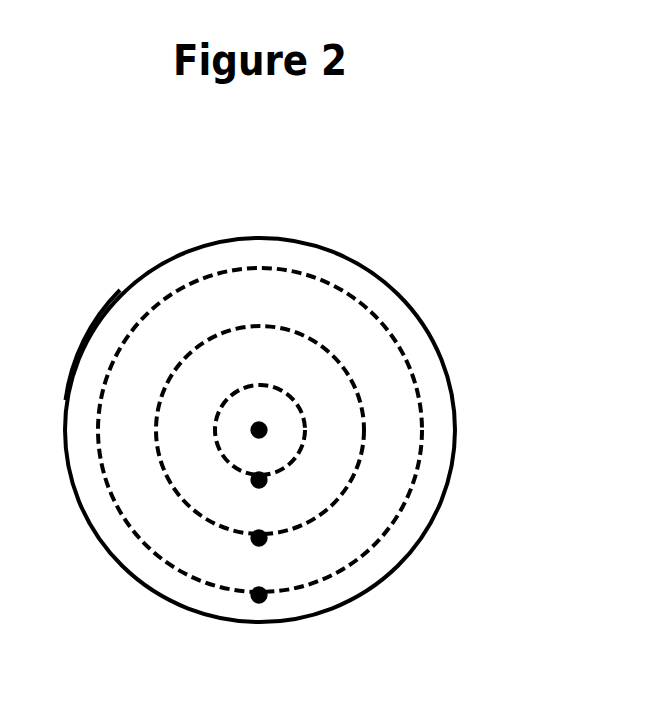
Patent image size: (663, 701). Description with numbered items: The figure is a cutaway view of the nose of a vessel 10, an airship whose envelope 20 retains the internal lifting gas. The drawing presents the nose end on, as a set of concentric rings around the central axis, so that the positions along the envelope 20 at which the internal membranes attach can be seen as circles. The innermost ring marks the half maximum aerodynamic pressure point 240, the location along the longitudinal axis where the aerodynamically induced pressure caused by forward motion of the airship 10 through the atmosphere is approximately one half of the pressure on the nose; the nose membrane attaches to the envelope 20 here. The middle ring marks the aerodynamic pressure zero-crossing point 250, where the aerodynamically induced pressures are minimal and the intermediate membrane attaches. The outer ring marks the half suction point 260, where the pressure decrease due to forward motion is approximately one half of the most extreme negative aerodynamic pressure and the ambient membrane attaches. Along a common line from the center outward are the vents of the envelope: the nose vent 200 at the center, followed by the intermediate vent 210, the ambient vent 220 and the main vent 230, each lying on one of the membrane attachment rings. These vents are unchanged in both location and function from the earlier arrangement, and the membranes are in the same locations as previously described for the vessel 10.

The vessel 10 is at (424, 283).
The envelope 20 is at (98, 300).
The nose vent 200 is at (284, 430).
The intermediate vent 210 is at (284, 483).
The ambient vent 220 is at (284, 545).
The main vent 230 is at (283, 603).
The half maximum aerodynamic pressure point 240 is at (234, 376).
The aerodynamic pressure zero-crossing point 250 is at (268, 312).
The half suction point 260 is at (327, 264).